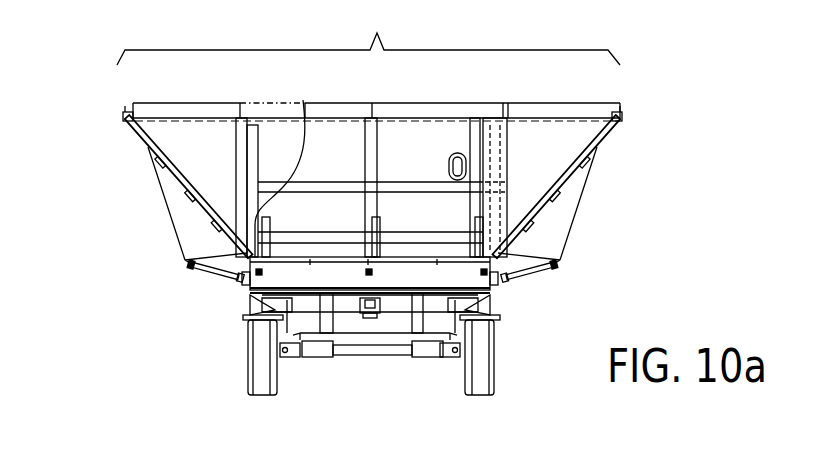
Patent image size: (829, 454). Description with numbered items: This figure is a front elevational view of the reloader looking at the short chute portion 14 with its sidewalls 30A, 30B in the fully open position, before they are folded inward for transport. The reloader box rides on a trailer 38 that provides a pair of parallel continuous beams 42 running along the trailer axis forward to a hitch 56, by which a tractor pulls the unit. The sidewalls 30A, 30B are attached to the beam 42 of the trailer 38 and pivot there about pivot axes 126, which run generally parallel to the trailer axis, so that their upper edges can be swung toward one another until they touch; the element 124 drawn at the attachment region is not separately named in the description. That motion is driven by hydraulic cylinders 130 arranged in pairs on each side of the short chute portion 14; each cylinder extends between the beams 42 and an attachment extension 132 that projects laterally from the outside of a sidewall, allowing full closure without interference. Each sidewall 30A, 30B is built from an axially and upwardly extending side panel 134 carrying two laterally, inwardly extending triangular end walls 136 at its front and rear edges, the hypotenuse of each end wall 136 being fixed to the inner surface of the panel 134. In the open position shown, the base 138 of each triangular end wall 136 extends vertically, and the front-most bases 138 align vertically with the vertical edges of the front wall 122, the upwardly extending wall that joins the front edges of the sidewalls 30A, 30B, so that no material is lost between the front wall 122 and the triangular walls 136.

The short chute portion 14 is at (518, 87).
The sidewall 30A is at (620, 117).
The sidewall 30B is at (128, 117).
The trailer 38 is at (516, 362).
The beams 42 is at (262, 280).
The hitch 56 is at (378, 313).
The front wall 122 is at (337, 100).
The upper frame member 124 is at (500, 262).
The pivot axes 126 is at (247, 288).
The hydraulic cylinders 130 is at (202, 265).
The attachment extensions 132 is at (180, 222).
The side panels 134 is at (188, 147).
The triangular end walls 136 is at (150, 150).
The base 138 is at (238, 162).